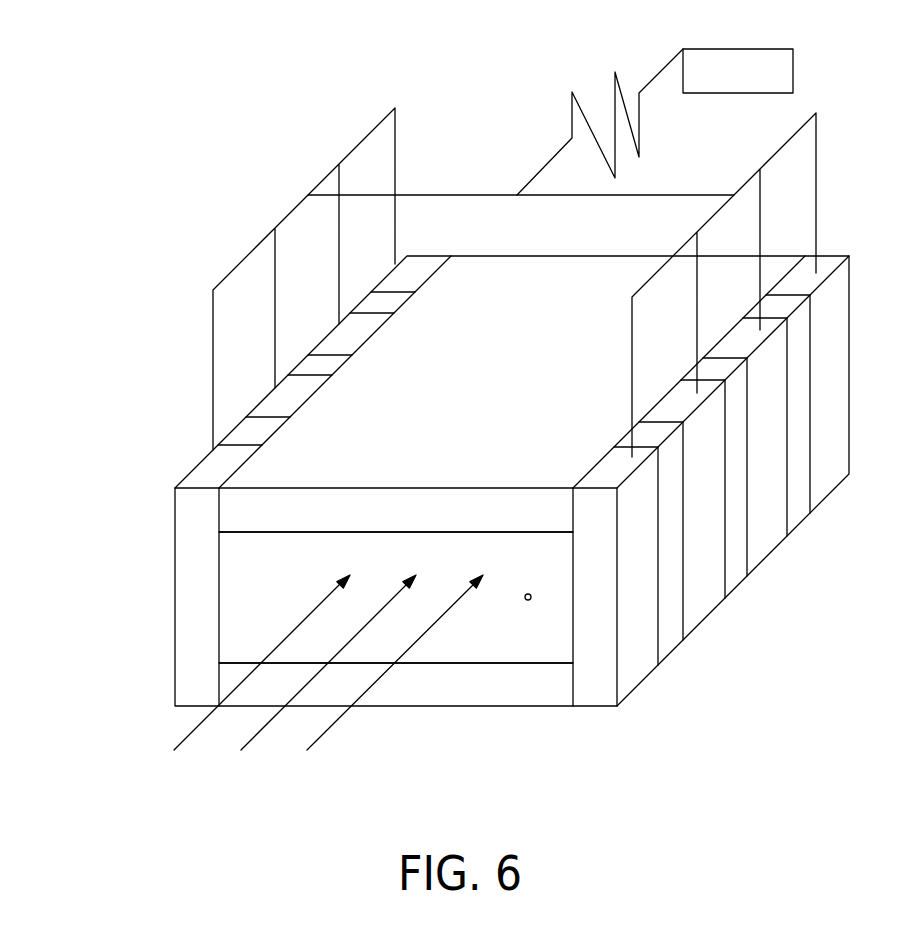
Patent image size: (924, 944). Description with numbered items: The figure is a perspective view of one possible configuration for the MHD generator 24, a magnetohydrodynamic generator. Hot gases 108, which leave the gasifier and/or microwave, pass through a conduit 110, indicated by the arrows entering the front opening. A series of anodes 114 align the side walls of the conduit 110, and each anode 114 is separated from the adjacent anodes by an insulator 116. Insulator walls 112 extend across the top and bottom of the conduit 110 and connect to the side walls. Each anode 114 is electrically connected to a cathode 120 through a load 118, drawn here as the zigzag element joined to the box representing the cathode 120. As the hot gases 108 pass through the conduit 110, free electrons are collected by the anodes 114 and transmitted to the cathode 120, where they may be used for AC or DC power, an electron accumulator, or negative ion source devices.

The MHD generator 24 is at (258, 198).
The hot gases 108 is at (348, 708).
The conduit 110 is at (530, 600).
The insulator walls 112 is at (218, 675).
The anodes 114 is at (174, 510).
The insulator 116 is at (808, 517).
The load 118 is at (615, 112).
The cathode 120 is at (793, 71).